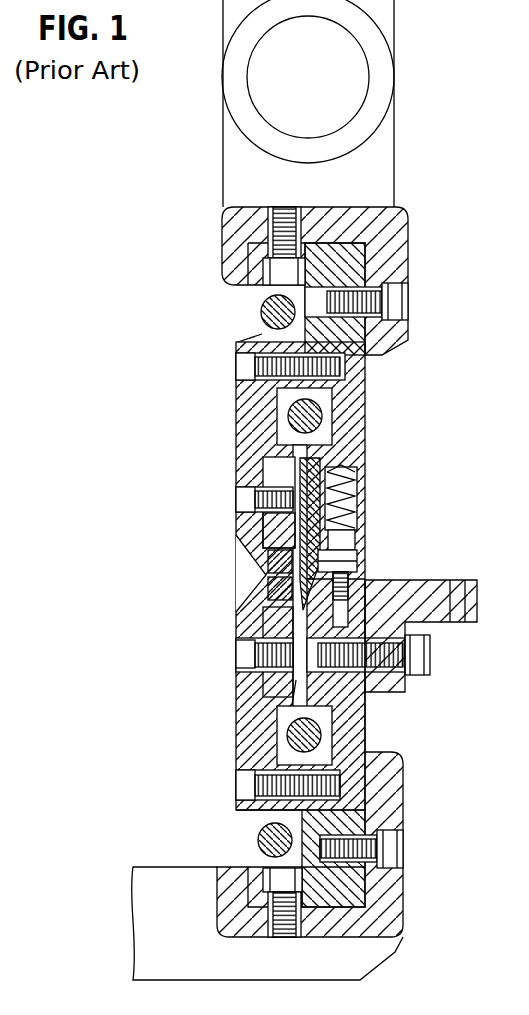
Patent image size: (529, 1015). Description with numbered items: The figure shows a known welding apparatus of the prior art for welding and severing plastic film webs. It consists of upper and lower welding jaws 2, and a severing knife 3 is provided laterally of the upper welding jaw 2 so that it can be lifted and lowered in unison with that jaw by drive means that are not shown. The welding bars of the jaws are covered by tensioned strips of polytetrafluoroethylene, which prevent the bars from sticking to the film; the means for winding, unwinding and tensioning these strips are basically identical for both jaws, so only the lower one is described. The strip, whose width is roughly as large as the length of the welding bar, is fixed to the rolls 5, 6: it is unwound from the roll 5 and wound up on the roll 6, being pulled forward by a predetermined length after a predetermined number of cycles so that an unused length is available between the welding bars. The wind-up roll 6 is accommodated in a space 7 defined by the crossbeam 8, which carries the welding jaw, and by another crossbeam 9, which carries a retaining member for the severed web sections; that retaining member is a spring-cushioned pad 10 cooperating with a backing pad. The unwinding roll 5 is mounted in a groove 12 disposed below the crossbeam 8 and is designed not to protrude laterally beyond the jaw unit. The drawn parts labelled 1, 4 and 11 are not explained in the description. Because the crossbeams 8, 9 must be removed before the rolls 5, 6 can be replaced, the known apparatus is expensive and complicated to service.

The upper clamp insert 1 is at (263, 569).
The welding jaws 2 is at (272, 585).
The severing knife 3 is at (303, 568).
The clamping bolt 4 is at (236, 652).
The roll 5 is at (258, 840).
The roll 6 is at (318, 733).
The space 7 is at (282, 733).
The crossbeam 8 is at (245, 712).
The crossbeam 9 is at (353, 708).
The spring-cushioned pad 10 is at (343, 543).
The support block 11 is at (362, 590).
The groove 12 is at (297, 820).